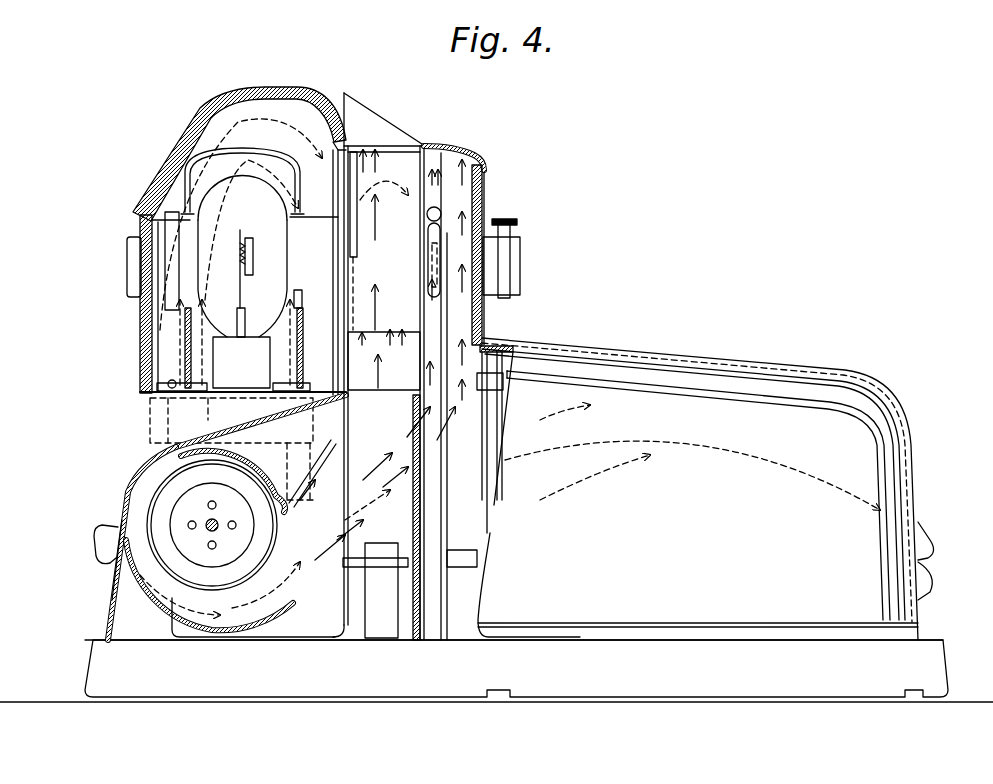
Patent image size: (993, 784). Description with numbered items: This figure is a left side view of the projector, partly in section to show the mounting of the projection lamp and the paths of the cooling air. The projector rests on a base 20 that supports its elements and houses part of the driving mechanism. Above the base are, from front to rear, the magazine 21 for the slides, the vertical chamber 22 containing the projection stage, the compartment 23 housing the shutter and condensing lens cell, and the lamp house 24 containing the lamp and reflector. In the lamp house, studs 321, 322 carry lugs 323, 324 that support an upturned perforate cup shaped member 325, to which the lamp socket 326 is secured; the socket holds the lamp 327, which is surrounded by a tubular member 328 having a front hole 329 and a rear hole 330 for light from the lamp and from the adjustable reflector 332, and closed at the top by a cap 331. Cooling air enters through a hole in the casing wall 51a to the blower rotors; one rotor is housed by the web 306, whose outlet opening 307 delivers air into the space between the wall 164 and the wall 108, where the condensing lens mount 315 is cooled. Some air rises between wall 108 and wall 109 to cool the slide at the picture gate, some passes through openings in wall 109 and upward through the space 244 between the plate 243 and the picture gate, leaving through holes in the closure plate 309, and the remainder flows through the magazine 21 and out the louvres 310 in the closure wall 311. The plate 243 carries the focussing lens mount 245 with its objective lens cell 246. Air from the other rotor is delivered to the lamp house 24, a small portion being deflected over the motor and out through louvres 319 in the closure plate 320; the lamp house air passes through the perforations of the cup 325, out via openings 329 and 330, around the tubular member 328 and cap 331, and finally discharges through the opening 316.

The base 20 is at (935, 666).
The magazine 21 is at (855, 425).
The vertical chamber 22 is at (472, 165).
The compartment 23 is at (415, 144).
The lamp house 24 is at (205, 108).
The casing wall 51a is at (123, 602).
The wall 108 is at (420, 392).
The wall 109 is at (458, 396).
The wall 164 is at (346, 428).
The plate 243 is at (487, 175).
The space 244 is at (455, 200).
The focussing lens mount 245 is at (498, 280).
The objective lens cell 246 is at (522, 246).
The web 306 is at (284, 608).
The outlet opening 307 is at (377, 483).
The closure plate 309 is at (445, 148).
The louvres 310 is at (926, 548).
The closure wall 311 is at (908, 458).
The condensing lens mount 315 is at (384, 269).
The opening 316 is at (342, 102).
The louvres 319 is at (100, 535).
The closure plate 320 is at (108, 626).
The stud 321 is at (168, 421).
The stud 322 is at (296, 418).
The lug 323 is at (152, 389).
The lug 324 is at (302, 375).
The perforate cup shaped member 325 is at (188, 360).
The lamp socket 326 is at (241, 362).
The lamp 327 is at (242, 256).
The tubular member 328 is at (312, 322).
The front hole 329 is at (300, 305).
The rear hole 330 is at (215, 236).
The cap 331 is at (238, 150).
The adjustable reflector 332 is at (162, 268).